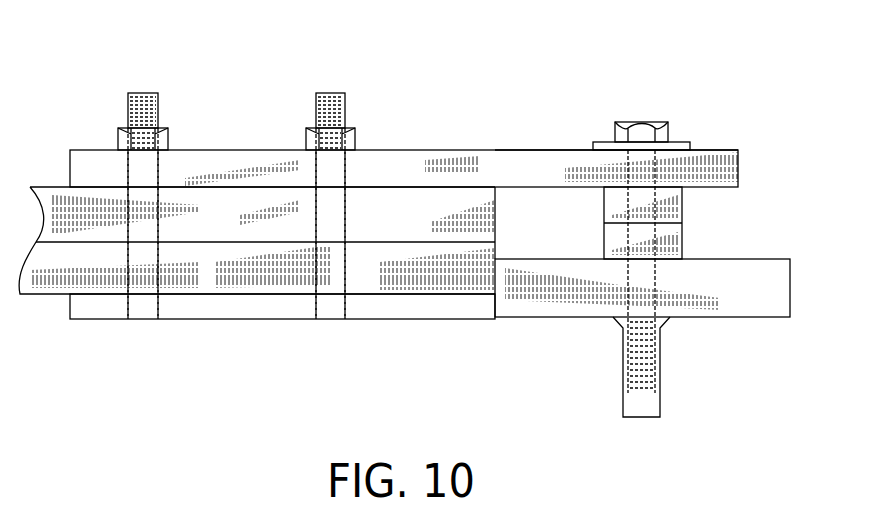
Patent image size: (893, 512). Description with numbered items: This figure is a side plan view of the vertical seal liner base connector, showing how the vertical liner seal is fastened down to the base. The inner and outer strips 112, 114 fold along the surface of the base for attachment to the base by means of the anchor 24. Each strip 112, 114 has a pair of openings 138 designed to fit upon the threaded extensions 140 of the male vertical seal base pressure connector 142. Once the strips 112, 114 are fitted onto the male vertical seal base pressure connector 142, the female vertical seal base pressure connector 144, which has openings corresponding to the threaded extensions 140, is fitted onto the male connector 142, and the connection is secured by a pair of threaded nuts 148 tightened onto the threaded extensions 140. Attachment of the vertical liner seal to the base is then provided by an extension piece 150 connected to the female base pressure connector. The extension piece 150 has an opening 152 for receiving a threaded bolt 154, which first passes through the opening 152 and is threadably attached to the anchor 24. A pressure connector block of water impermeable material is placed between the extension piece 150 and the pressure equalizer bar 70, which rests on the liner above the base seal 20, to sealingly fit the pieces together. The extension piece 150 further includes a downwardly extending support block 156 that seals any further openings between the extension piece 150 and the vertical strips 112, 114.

The base seal 20 is at (740, 305).
The anchor 24 is at (660, 410).
The pressure equalizer bar 70 is at (682, 232).
The inner strip 112 is at (50, 198).
The outer strip 114 is at (42, 290).
The opening 138 is at (126, 280).
The threaded extension 140 is at (128, 98).
The male vertical seal base pressure connector 142 is at (247, 312).
The female vertical seal base pressure connector 144 is at (433, 170).
The threaded nut 148 is at (118, 138).
The extension piece 150 is at (546, 150).
The opening 152 is at (655, 168).
The threaded bolt 154 is at (662, 137).
The support block 156 is at (546, 248).